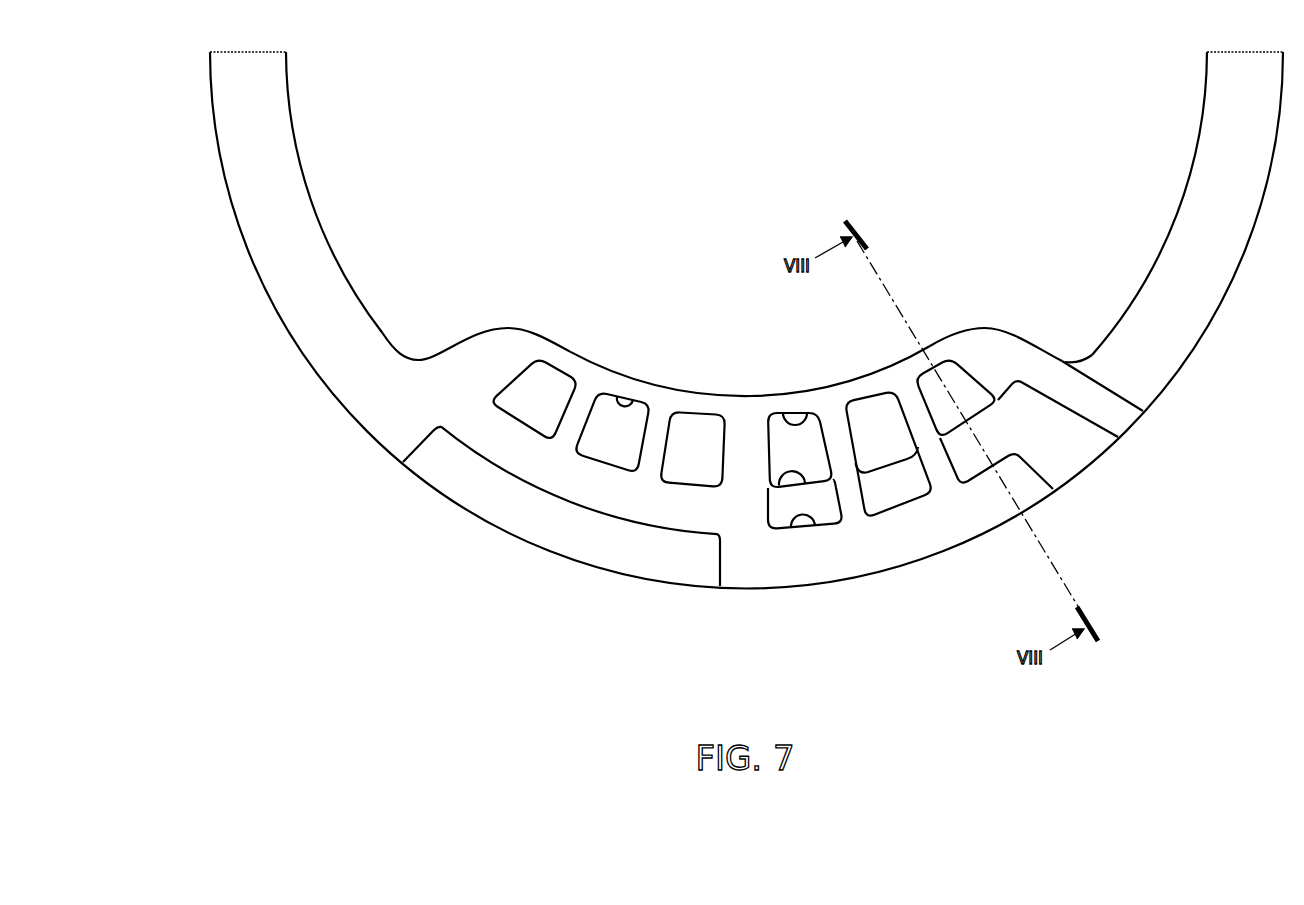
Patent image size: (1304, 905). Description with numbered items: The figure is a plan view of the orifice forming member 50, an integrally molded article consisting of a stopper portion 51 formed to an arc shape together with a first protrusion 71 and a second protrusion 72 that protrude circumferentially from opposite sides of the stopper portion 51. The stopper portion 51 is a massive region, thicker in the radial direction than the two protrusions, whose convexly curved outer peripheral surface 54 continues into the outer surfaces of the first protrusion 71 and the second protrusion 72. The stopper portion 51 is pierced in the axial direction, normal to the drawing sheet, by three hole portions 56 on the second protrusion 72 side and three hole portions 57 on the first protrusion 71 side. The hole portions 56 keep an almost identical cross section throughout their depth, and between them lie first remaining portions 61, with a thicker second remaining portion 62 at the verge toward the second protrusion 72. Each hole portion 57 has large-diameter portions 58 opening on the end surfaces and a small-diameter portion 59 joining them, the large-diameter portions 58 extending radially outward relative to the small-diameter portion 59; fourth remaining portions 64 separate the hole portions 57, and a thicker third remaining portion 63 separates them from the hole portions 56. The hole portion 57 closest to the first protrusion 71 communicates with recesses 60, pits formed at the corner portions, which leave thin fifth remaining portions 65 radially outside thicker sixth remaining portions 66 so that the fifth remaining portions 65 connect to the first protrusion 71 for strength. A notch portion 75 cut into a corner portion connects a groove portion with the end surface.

The orifice forming member 50 is at (705, 100).
The stopper portion 51 is at (572, 305).
The outer peripheral surface 54 is at (750, 588).
The hole portions 56 is at (618, 397).
The hole portions 57 is at (803, 417).
The large-diameter portions 58 is at (793, 524).
The small-diameter portion 59 is at (785, 474).
The recesses 60 is at (1085, 416).
The first remaining portions 61 is at (663, 415).
The second remaining portion 62 is at (464, 362).
The third remaining portion 63 is at (741, 440).
The fourth remaining portions 64 is at (903, 392).
The fifth remaining portions 65 is at (1090, 393).
The sixth remaining portions 66 is at (980, 347).
The first protrusion 71 is at (1222, 145).
The second protrusion 72 is at (270, 147).
The notch portion 75 is at (410, 452).